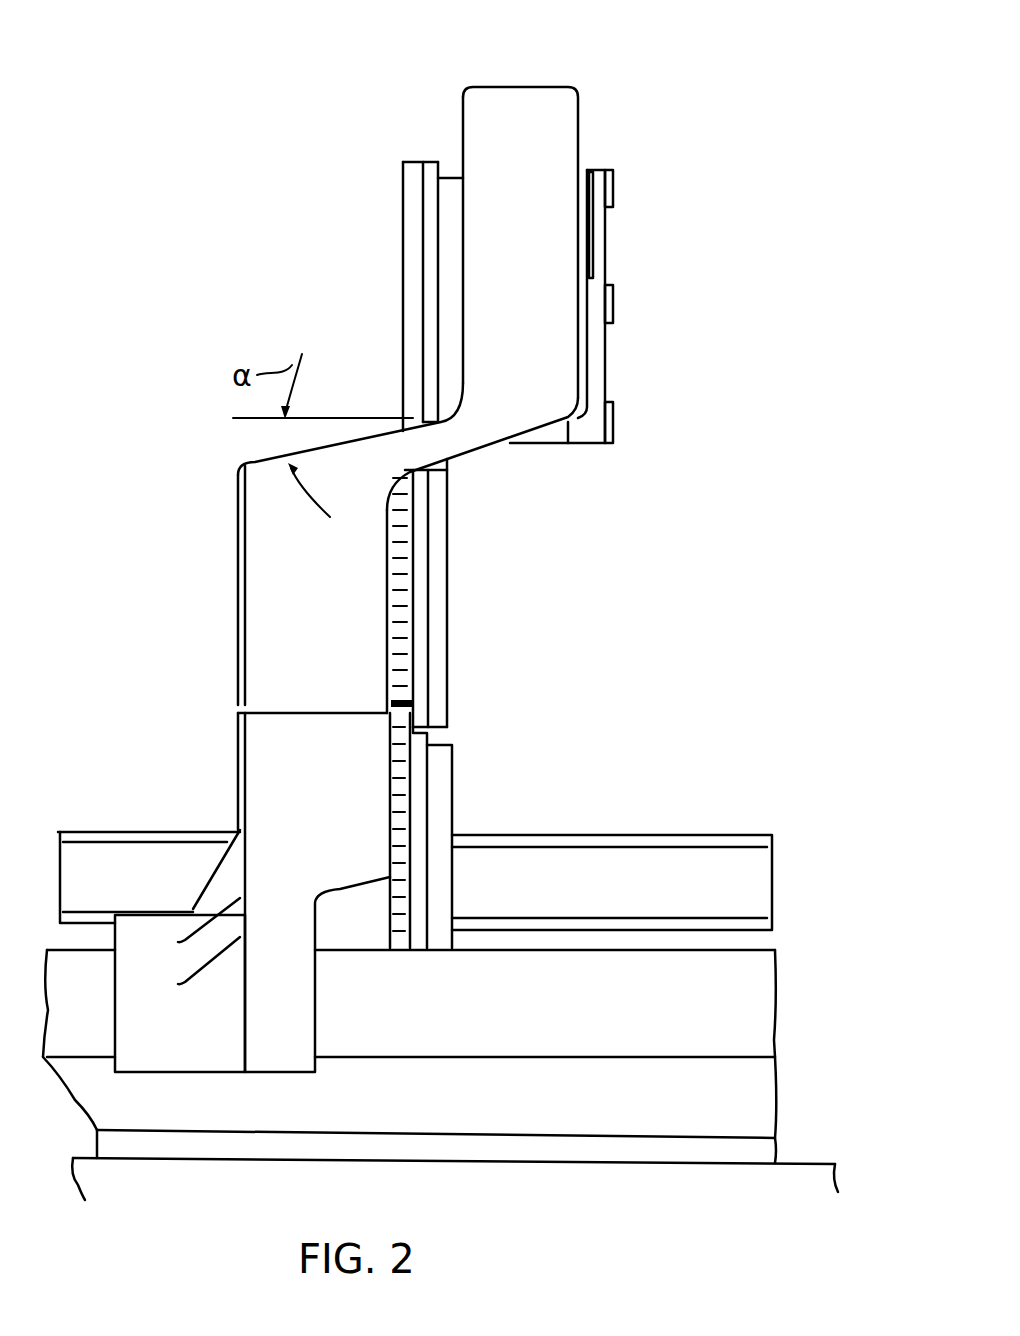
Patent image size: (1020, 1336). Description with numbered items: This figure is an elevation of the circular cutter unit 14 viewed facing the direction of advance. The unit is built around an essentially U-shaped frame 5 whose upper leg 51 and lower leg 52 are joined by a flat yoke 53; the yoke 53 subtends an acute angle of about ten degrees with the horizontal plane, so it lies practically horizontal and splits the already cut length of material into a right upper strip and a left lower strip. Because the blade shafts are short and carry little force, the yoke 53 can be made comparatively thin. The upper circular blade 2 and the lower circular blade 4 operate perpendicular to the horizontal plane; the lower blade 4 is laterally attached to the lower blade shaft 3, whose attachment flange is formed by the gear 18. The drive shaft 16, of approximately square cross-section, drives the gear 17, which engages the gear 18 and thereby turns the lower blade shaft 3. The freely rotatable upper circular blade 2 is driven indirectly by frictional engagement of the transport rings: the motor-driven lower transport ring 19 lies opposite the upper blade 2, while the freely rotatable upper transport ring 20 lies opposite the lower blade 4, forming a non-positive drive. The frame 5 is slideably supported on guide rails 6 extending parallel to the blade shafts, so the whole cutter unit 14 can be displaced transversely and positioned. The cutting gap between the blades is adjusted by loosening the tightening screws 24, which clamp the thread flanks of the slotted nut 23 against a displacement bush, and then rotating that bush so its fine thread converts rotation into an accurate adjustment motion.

The upper circular blade 2 is at (433, 220).
The lower blade shaft 3 is at (628, 0).
The lower circular blade 4 is at (425, 578).
The frame 5 is at (409, 579).
The guide rails 6 is at (712, 970).
The circular cutter unit 14 is at (623, 299).
The drive shaft 16 is at (620, 862).
The gear 17 is at (398, 804).
The gear 18 is at (395, 673).
The lower transport ring 19 is at (443, 535).
The upper transport ring 20 is at (410, 277).
The slotted nut 23 is at (598, 357).
The tightening screws 24 is at (610, 183).
The upper leg 51 is at (552, 123).
The lower leg 52 is at (292, 632).
The yoke 53 is at (425, 443).